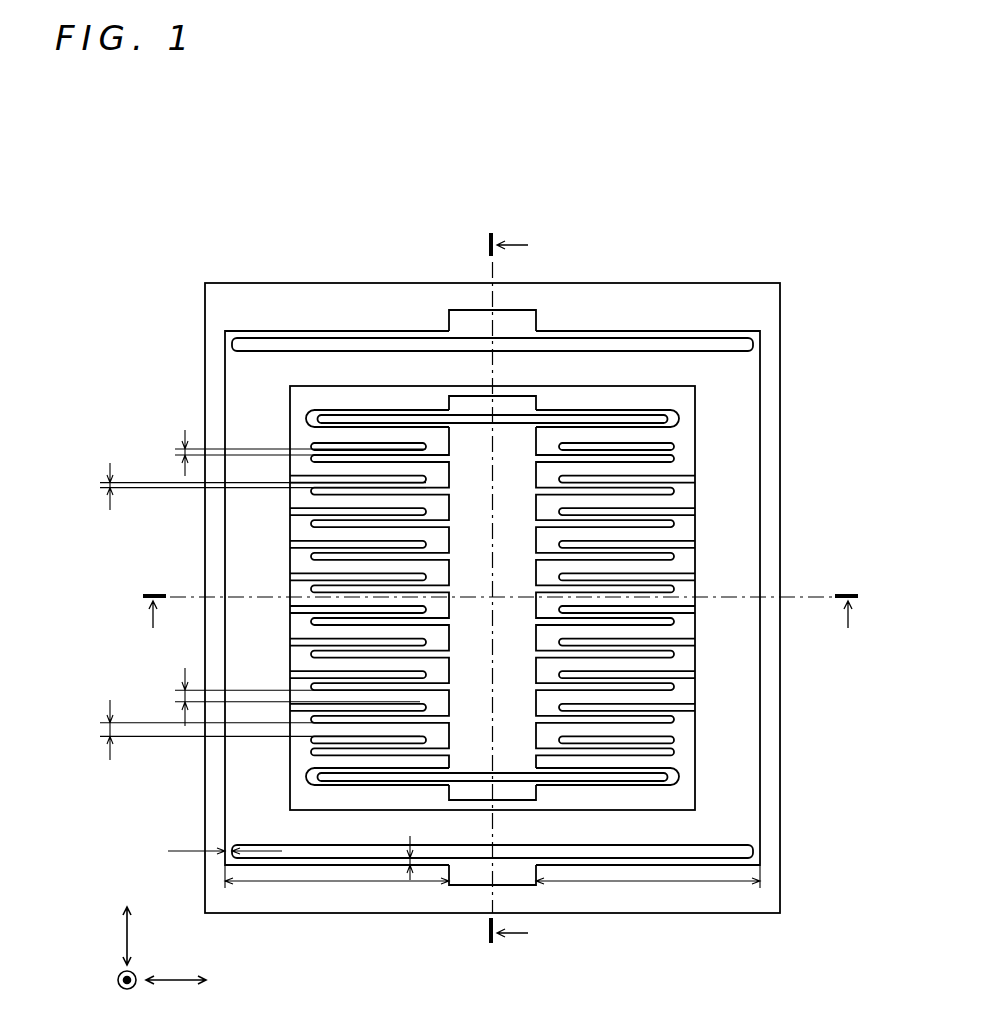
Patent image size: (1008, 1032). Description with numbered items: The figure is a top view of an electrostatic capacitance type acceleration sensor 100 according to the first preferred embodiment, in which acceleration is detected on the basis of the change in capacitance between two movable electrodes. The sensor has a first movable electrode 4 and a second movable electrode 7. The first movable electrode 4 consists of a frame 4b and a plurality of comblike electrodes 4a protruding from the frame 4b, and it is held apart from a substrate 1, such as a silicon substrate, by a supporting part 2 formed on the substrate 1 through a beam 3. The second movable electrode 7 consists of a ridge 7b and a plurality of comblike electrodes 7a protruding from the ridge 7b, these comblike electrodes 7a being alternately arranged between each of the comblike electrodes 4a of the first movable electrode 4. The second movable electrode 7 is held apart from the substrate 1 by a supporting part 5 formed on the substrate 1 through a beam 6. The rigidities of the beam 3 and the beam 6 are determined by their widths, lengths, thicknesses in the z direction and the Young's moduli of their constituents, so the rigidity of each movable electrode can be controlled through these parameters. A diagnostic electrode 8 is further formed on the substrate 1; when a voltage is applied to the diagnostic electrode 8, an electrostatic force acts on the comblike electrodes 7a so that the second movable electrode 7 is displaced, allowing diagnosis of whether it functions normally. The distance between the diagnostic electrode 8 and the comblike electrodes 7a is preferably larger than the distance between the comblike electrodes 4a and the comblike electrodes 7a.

The substrate 1 is at (233, 305).
The supporting part 2 is at (468, 310).
The beam 3 is at (708, 331).
The first movable electrode 4 is at (544, 593).
The comblike electrodes 4a is at (683, 515).
The frame 4b is at (526, 593).
The supporting part 5 is at (442, 403).
The beam 6 is at (370, 410).
The second movable electrode 7 is at (585, 593).
The comblike electrodes 7a is at (665, 688).
The ridge 7b is at (523, 668).
The diagnostic electrode 8 is at (350, 443).
The electrostatic capacitance type acceleration sensor 100 is at (524, 198).